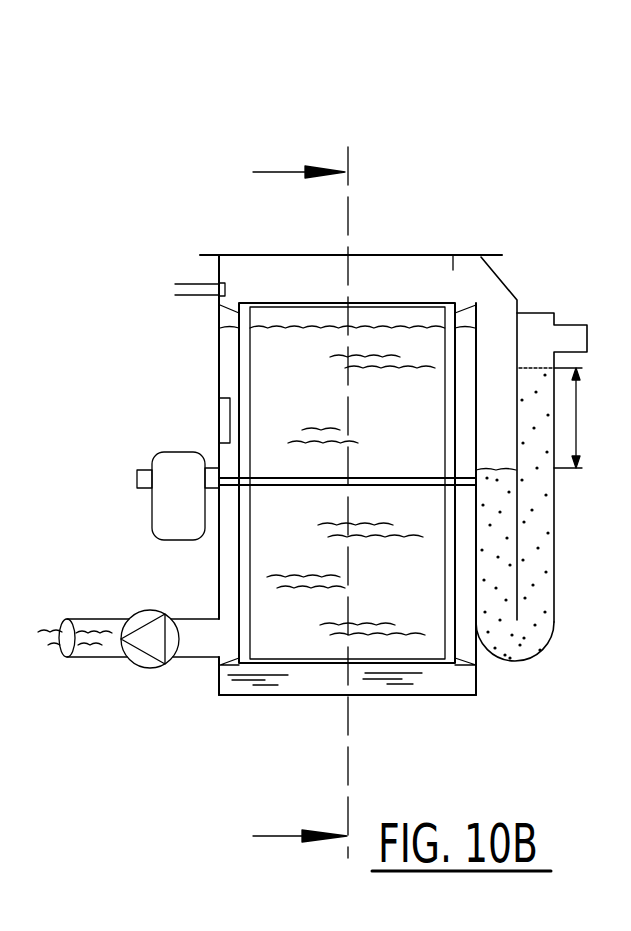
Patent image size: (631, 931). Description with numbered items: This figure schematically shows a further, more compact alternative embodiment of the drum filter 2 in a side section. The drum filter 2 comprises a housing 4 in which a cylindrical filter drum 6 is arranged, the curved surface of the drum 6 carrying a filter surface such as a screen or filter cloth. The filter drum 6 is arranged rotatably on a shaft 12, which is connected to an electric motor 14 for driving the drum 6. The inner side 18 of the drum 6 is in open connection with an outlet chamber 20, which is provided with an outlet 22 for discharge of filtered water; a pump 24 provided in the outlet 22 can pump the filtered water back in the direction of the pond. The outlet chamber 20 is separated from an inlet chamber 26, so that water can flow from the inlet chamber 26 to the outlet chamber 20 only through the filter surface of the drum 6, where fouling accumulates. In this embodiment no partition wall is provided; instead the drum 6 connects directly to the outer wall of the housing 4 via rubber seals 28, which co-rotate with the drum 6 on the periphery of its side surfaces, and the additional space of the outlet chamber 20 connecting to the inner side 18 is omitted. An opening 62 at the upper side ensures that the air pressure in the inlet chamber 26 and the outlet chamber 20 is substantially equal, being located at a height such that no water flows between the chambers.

The drum filter 2 is at (312, 458).
The housing 4 is at (408, 254).
The cylindrical filter drum 6 is at (245, 330).
The shaft 12 is at (272, 482).
The electric motor 14 is at (176, 470).
The inner side of drum 18 is at (397, 431).
The outlet chamber 20 is at (292, 540).
The outlet 22 is at (203, 643).
The pump 24 is at (130, 663).
The inlet chamber 26 is at (352, 683).
The rubber seals 28 is at (460, 300).
The opening 62 is at (217, 273).